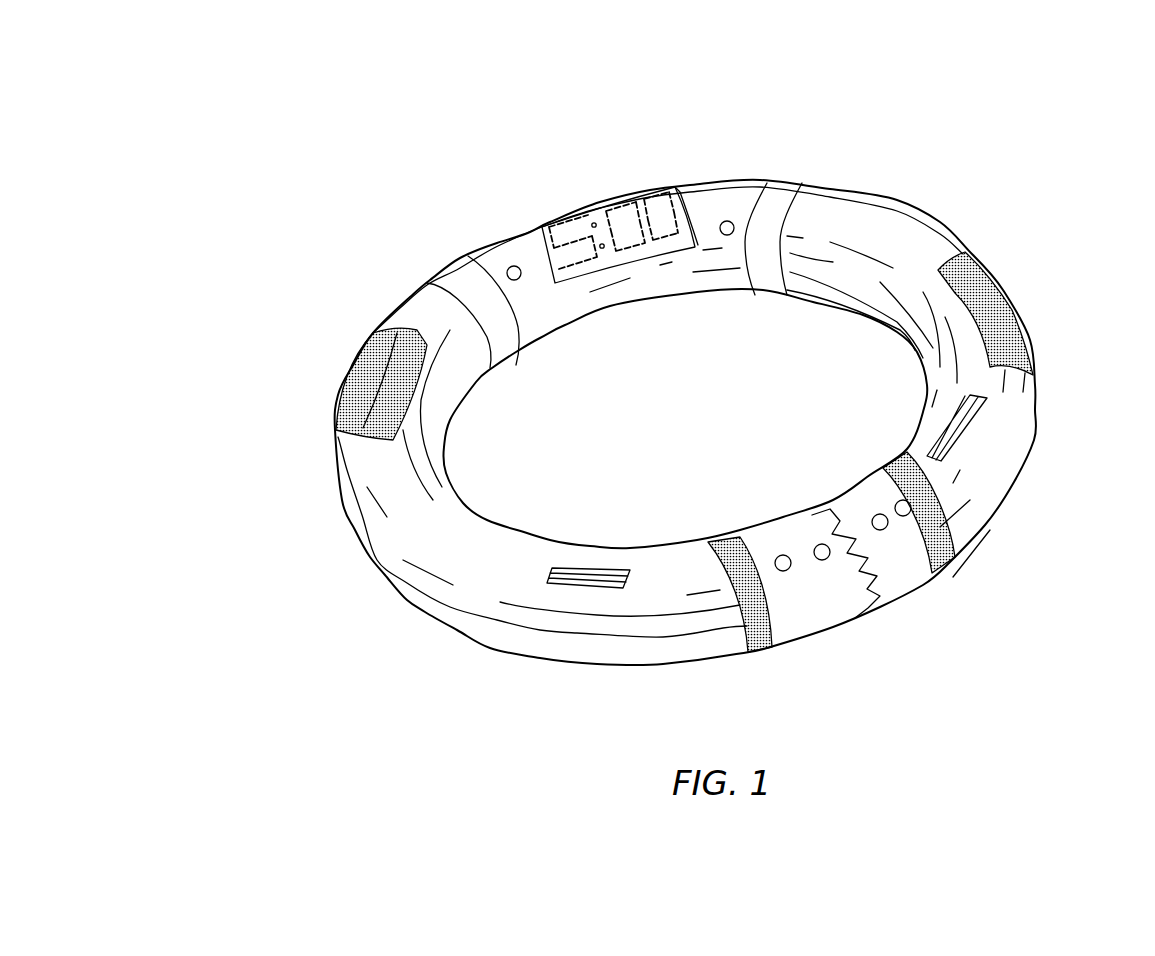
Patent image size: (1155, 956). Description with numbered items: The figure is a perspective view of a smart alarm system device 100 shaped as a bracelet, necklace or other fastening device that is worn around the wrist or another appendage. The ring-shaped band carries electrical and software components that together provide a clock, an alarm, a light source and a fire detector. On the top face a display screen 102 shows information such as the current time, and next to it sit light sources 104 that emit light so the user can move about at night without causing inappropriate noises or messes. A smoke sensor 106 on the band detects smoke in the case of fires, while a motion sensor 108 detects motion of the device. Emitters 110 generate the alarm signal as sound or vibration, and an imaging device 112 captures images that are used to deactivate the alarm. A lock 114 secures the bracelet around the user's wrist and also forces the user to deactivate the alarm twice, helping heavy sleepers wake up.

The smart alarm system device 100 is at (258, 151).
The display screen 102 is at (543, 226).
The light source 104 is at (453, 270).
The smoke sensor 106 is at (338, 363).
The motion sensor 108 is at (1008, 293).
The emitter 110 is at (968, 425).
The imaging device 112 is at (511, 267).
The lock 114 is at (897, 597).